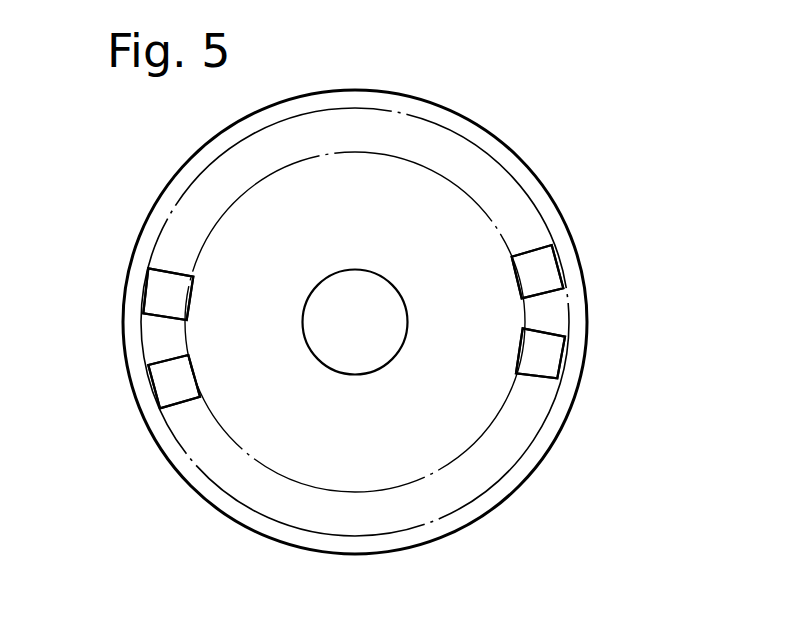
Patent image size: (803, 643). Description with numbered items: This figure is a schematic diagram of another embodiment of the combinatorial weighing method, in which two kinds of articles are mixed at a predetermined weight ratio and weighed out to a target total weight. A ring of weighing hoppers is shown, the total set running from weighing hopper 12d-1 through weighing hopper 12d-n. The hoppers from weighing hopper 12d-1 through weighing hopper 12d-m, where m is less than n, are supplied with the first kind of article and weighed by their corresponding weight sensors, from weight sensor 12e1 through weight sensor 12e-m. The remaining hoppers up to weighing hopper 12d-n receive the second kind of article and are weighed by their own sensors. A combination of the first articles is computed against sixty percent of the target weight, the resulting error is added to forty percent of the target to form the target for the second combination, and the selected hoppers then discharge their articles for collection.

The weighing hopper 12d-1 is at (111, 294).
The weighing hopper 12d-n is at (115, 384).
The weighing hopper 12d-m is at (597, 270).
The weight sensor 12e1 is at (212, 294).
The weight sensor 12e-m is at (355, 326).